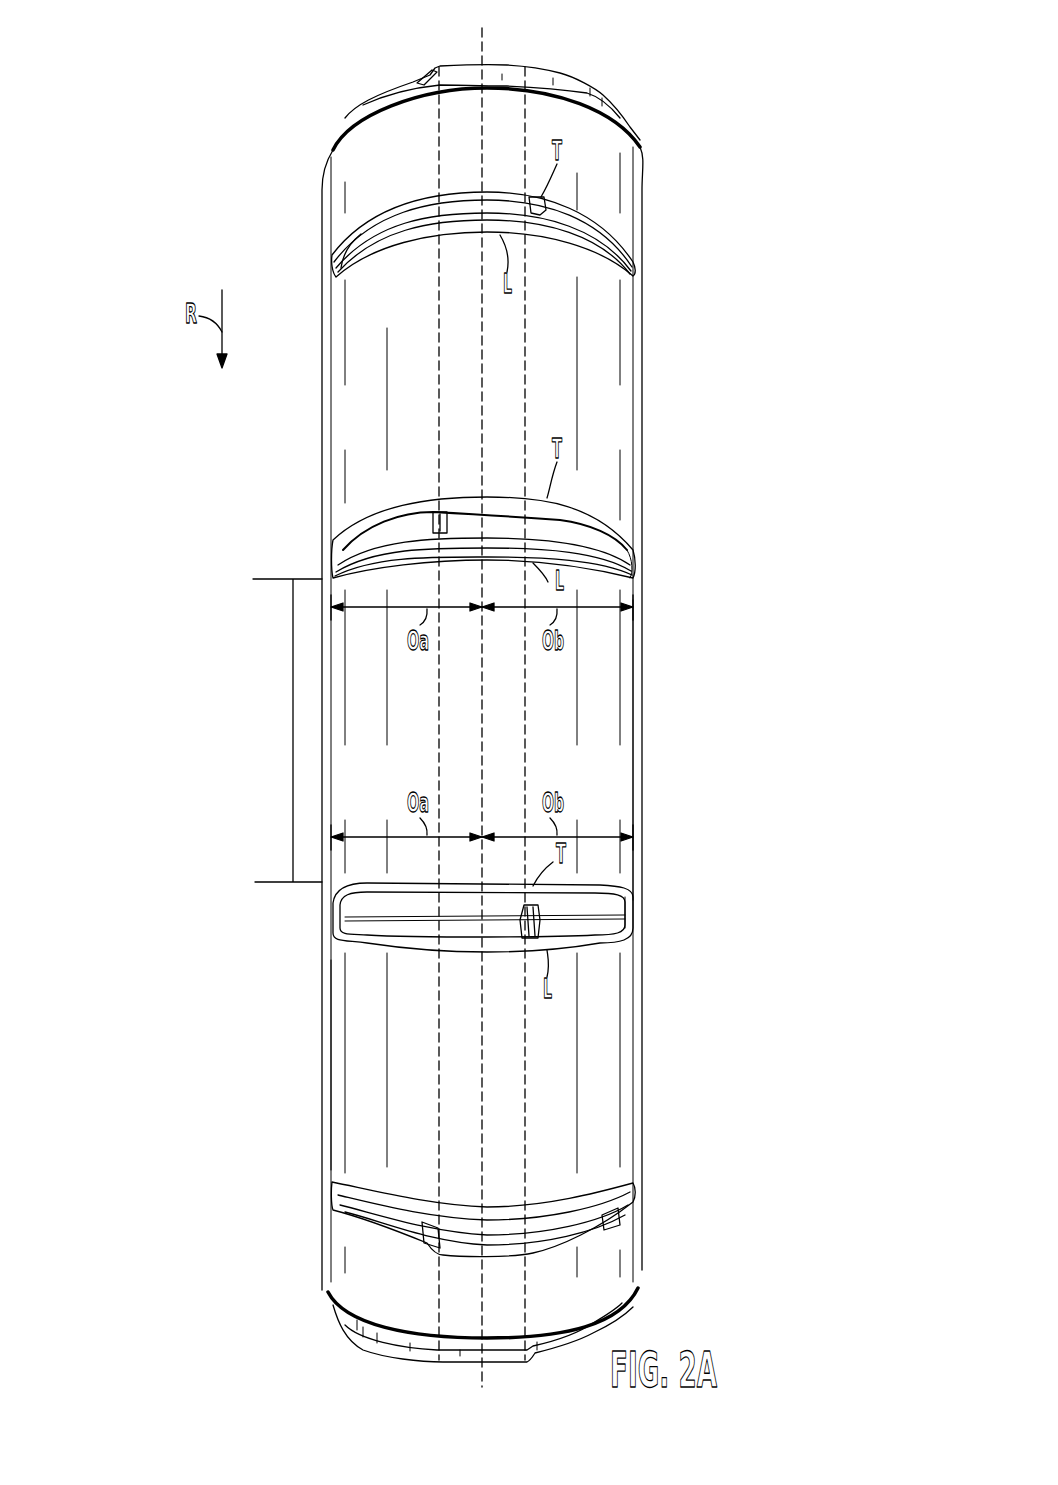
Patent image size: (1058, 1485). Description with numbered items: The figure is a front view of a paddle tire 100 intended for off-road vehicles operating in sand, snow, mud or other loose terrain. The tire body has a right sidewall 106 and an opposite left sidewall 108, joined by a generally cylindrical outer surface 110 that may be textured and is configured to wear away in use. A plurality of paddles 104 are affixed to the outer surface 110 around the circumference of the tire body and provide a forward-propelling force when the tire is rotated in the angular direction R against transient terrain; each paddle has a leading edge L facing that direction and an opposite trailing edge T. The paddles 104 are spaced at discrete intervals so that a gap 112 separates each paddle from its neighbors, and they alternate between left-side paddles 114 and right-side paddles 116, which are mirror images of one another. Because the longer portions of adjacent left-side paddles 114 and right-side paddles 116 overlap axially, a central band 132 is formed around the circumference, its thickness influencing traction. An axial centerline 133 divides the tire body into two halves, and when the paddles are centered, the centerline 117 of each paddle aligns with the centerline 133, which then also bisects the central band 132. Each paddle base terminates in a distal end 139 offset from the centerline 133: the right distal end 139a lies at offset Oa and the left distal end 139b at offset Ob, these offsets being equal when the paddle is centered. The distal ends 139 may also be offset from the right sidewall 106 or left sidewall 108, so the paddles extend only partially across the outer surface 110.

The paddle tire 100 is at (166, 124).
The paddles 104 is at (578, 220).
The right sidewall 106 is at (320, 1035).
The left sidewall 108 is at (643, 757).
The outer surface 110 is at (387, 163).
The gap 112 is at (293, 750).
The left-side paddles 114 is at (638, 1190).
The right-side paddles 116 is at (333, 252).
The paddle centerline 117 is at (482, 908).
The central band 132 is at (500, 392).
The axial centerline 133 is at (483, 112).
The distal end 139 is at (636, 277).
The right distal end 139a is at (328, 574).
The left distal end 139b is at (637, 572).